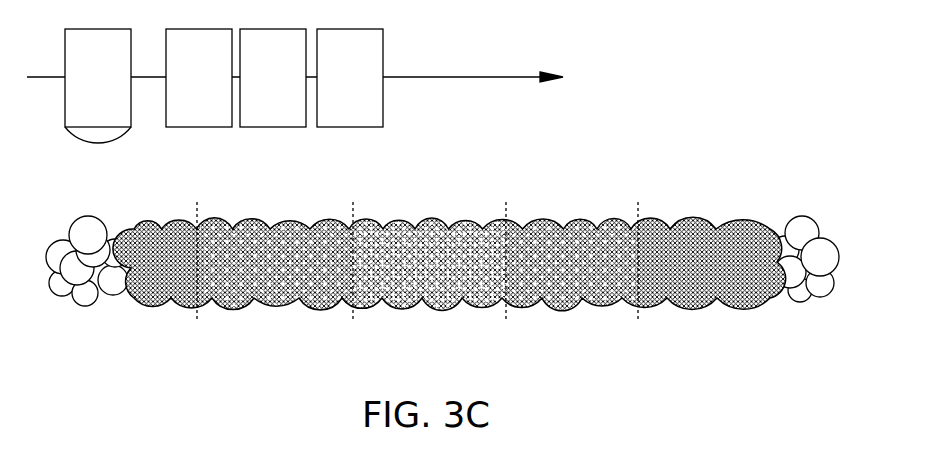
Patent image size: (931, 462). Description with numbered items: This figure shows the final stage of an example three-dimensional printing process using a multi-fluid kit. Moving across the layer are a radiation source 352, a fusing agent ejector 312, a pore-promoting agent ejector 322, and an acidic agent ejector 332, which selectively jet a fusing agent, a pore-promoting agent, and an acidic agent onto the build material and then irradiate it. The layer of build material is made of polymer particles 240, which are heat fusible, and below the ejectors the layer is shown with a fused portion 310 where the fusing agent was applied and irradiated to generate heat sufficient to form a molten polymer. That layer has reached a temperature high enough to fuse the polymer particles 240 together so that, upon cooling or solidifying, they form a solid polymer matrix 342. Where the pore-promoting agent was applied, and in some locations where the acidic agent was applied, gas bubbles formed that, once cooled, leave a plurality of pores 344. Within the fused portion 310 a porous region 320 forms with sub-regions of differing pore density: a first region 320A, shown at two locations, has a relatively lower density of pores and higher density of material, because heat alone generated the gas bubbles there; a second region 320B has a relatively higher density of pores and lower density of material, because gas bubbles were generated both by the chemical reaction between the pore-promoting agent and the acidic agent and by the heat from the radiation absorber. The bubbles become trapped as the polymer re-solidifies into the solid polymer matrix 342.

The radiation source 352 is at (118, 91).
The fusing agent ejector 312 is at (220, 91).
The pore-promoting agent ejector 322 is at (292, 91).
The acidic agent ejector 332 is at (368, 91).
The polymer particles 240 is at (90, 247).
The fused portion 310 is at (770, 338).
The porous region 320 is at (640, 178).
The first region 320A is at (417, 245).
The second region 320B is at (429, 257).
The solid polymer matrix 342 is at (742, 228).
The pores 344 is at (640, 228).